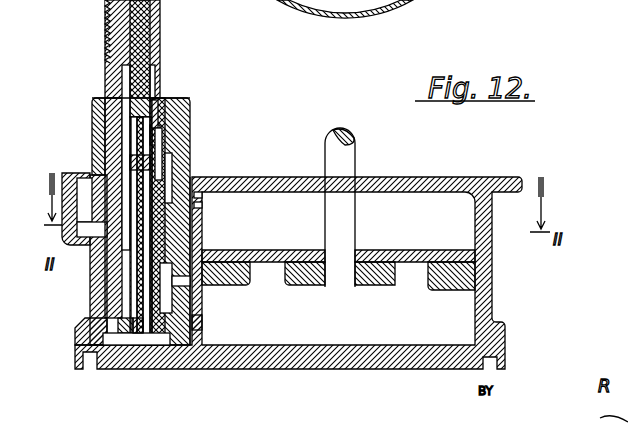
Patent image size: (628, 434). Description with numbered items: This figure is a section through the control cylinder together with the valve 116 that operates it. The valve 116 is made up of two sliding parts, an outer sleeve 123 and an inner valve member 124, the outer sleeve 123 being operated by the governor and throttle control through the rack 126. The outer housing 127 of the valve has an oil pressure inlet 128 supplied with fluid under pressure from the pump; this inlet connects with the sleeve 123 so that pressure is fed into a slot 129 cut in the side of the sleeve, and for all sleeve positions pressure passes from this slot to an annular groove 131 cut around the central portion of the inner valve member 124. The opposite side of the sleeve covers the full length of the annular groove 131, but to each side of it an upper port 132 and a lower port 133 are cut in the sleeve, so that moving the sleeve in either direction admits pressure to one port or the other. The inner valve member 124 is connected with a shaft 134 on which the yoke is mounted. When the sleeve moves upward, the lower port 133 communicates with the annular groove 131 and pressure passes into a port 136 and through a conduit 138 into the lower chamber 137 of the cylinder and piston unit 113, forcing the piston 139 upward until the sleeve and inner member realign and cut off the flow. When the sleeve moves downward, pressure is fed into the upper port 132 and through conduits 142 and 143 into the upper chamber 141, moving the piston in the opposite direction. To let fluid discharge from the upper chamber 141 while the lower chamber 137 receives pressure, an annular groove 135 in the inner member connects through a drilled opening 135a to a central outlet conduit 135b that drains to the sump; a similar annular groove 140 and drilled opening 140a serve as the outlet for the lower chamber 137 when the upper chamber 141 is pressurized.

The cylinder and piston unit 113 is at (423, 180).
The valve 116 is at (182, 98).
The outer sleeve 123 is at (110, 82).
The inner valve member 124 is at (148, 76).
The rack 126 is at (105, 22).
The outer housing 127 is at (92, 130).
The oil pressure inlet 128 is at (80, 176).
The slot 129 is at (92, 263).
The annular groove 131 is at (80, 324).
The upper port 132 is at (172, 167).
The lower port 133 is at (170, 298).
The shaft 134 is at (355, 153).
The annular groove 135 is at (155, 150).
The drilled opening 135a is at (152, 138).
The central outlet conduit 135b is at (142, 167).
The port 136 is at (182, 280).
The lower chamber 137 is at (354, 329).
The conduit 138 is at (197, 322).
The piston 139 is at (388, 250).
The annular groove 140 is at (118, 330).
The drilled opening 140a is at (128, 335).
The upper chamber 141 is at (298, 224).
The conduit 142 is at (198, 194).
The conduit 143 is at (199, 206).